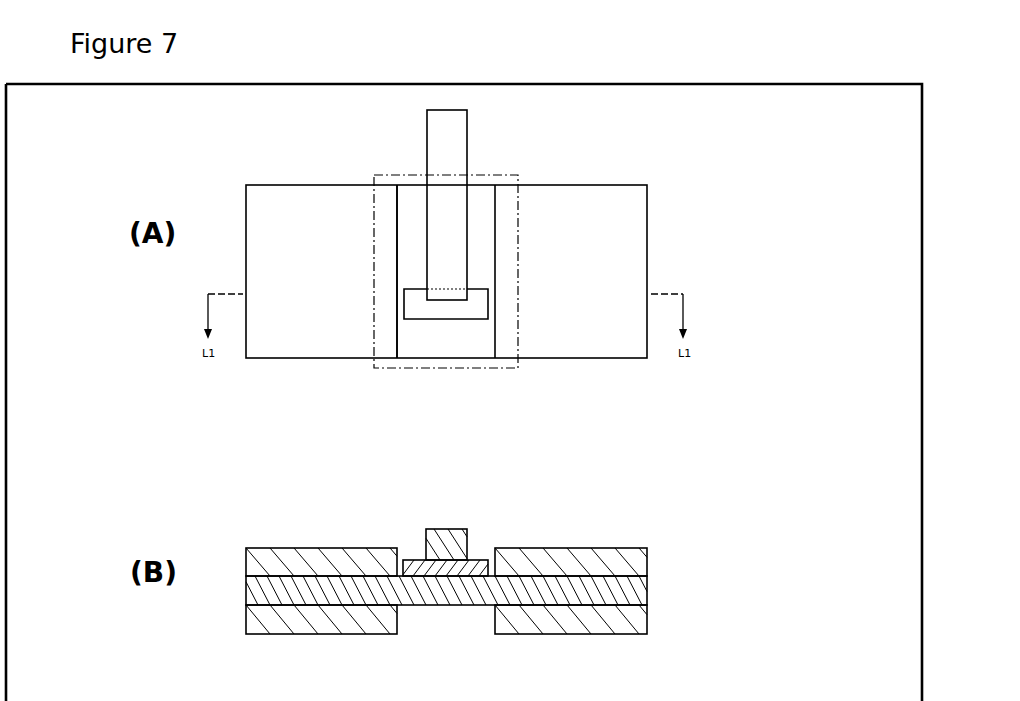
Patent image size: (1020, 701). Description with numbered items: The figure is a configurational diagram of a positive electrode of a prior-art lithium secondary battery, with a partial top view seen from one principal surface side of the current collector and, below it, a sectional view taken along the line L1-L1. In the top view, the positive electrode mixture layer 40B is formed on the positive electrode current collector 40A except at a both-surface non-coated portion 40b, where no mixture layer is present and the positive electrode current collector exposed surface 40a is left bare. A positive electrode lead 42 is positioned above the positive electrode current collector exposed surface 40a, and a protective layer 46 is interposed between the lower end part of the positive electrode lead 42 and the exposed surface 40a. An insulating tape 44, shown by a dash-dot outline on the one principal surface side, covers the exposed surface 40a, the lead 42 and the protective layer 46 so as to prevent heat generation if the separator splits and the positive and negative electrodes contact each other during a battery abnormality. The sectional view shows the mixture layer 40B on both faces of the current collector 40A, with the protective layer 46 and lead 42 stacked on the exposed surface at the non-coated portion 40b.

The positive electrode current collector 40A is at (628, 589).
The positive electrode mixture layer 40B is at (627, 221).
The positive electrode current collector exposed surface 40a is at (420, 323).
The both-surface non-coated portion 40b is at (407, 203).
The positive electrode lead 42 is at (457, 138).
The insulating tape 44 is at (519, 360).
The protective layer 46 is at (481, 312).